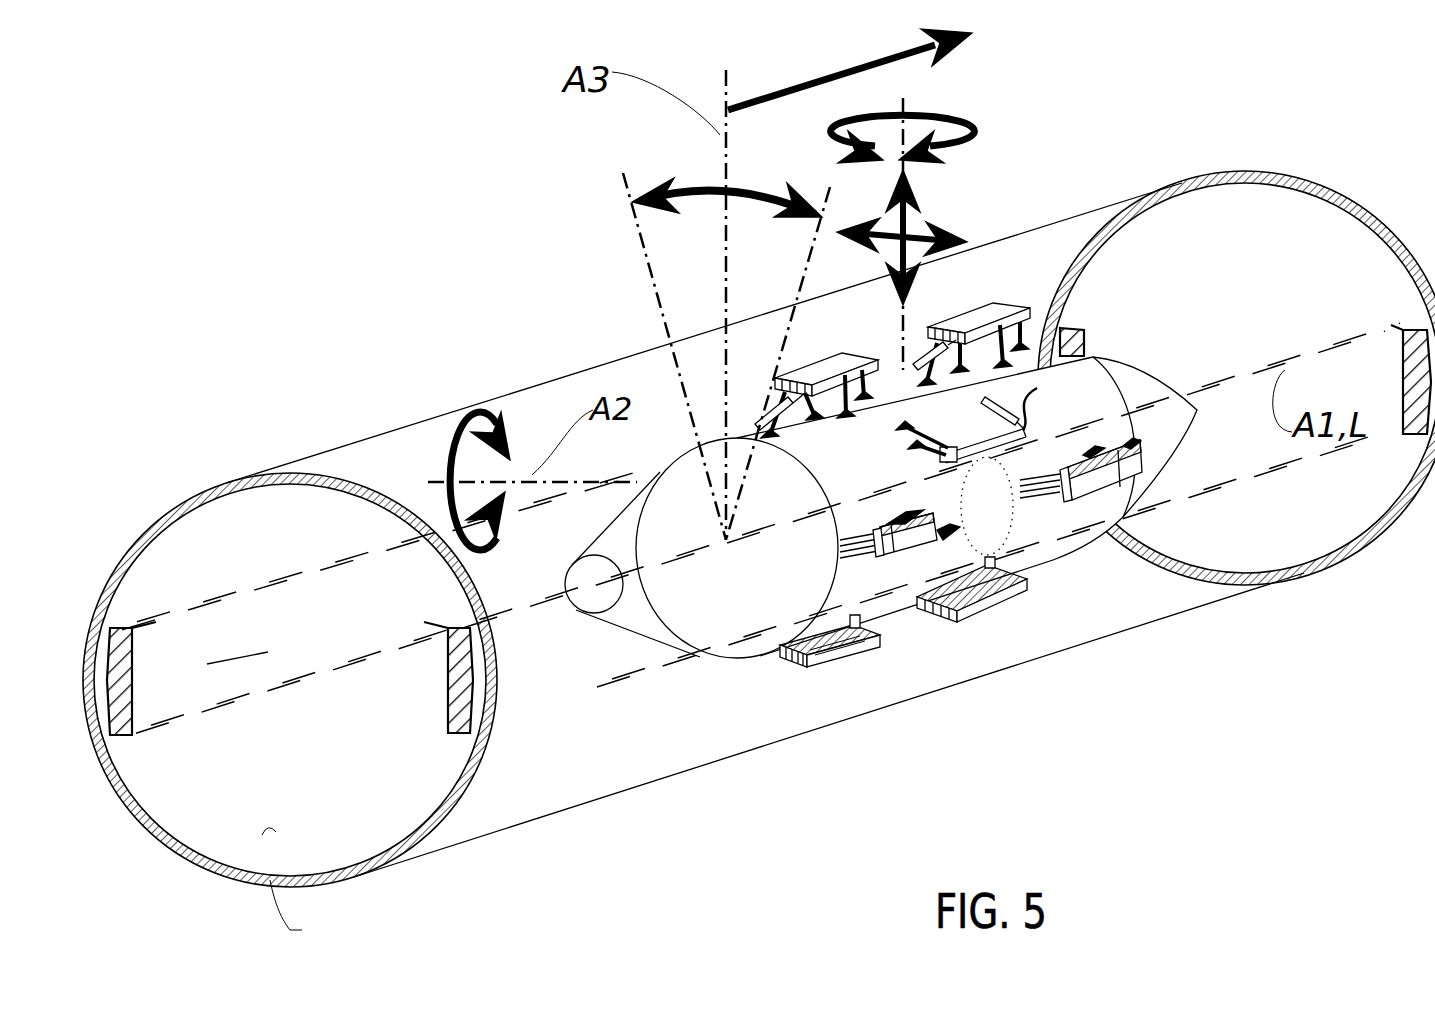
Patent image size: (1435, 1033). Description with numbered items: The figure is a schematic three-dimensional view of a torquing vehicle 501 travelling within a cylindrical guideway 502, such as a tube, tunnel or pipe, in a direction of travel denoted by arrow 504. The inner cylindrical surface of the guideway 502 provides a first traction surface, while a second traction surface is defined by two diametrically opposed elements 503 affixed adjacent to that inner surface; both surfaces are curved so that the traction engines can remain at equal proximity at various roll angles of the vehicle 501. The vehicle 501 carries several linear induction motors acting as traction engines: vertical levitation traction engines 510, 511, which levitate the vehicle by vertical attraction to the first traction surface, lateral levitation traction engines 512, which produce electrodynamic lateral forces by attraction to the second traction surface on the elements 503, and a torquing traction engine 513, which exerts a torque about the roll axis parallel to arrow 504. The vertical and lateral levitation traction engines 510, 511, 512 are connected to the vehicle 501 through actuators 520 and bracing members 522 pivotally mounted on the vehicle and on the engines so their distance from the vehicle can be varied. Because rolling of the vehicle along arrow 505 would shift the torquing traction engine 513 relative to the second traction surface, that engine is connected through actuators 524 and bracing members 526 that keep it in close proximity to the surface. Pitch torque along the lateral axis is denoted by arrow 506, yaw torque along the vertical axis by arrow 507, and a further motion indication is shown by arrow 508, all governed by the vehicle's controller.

The vehicle 501 is at (666, 630).
The cylindrical guideway 502 is at (387, 850).
The diametrically opposed elements 503 is at (140, 708).
The arrow denoting direction of travel 504 is at (850, 68).
The arrow denoting direction of vehicle rotation 505 is at (686, 201).
The arrow denoting pitch torque 506 is at (441, 481).
The arrow denoting yaw torque 507 is at (940, 125).
The translational motion 508 is at (918, 237).
The vertical levitation traction engine 510 is at (808, 361).
The vertical levitation traction engine 511 is at (862, 661).
The lateral levitation traction engine 512 is at (939, 558).
The torquing traction engine 513 is at (1045, 420).
The actuator 520 is at (757, 427).
The bracing member 522 is at (892, 622).
The actuator 524 is at (1020, 378).
The bracing member 526 is at (958, 424).